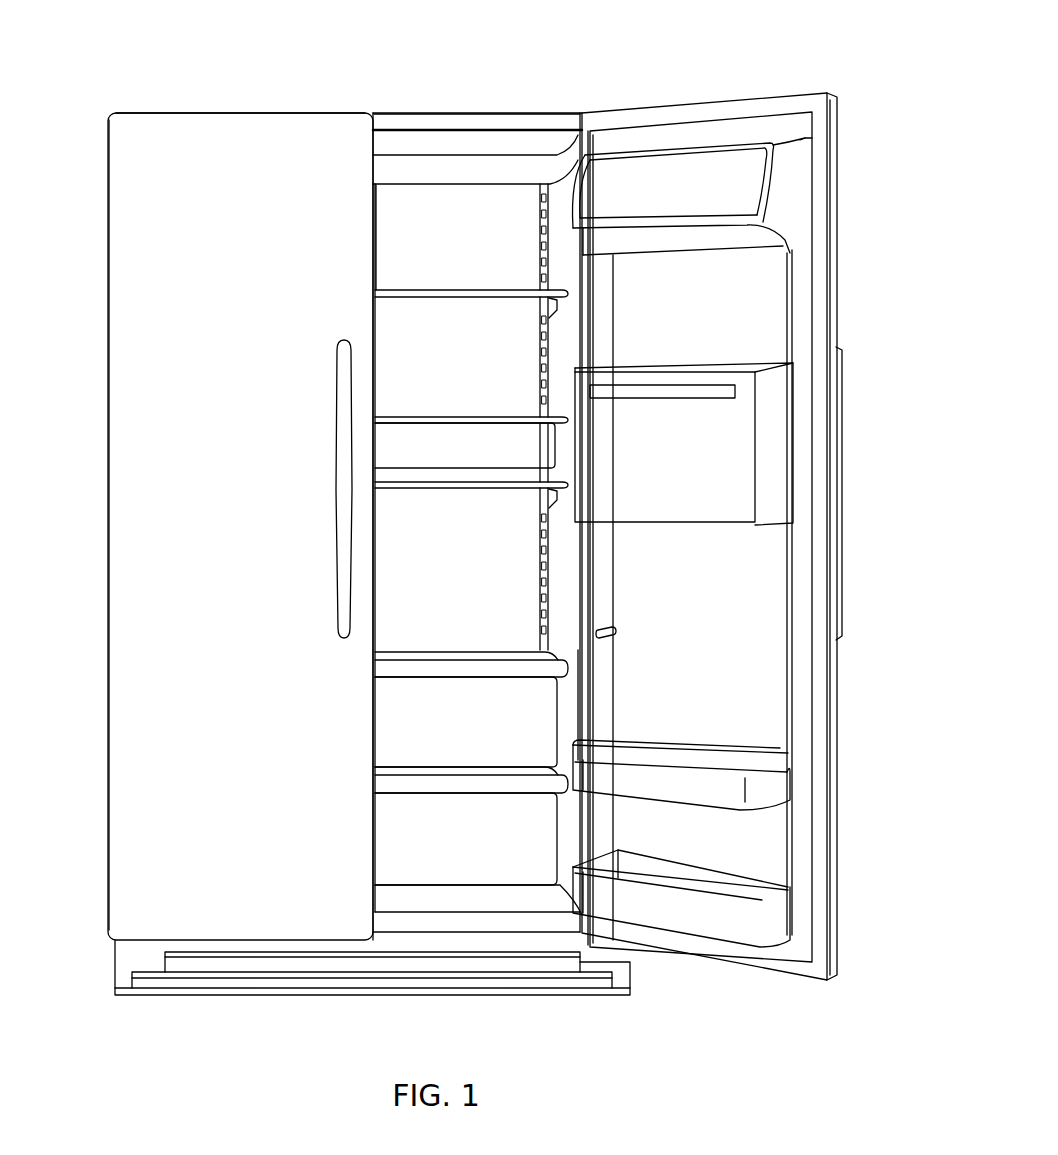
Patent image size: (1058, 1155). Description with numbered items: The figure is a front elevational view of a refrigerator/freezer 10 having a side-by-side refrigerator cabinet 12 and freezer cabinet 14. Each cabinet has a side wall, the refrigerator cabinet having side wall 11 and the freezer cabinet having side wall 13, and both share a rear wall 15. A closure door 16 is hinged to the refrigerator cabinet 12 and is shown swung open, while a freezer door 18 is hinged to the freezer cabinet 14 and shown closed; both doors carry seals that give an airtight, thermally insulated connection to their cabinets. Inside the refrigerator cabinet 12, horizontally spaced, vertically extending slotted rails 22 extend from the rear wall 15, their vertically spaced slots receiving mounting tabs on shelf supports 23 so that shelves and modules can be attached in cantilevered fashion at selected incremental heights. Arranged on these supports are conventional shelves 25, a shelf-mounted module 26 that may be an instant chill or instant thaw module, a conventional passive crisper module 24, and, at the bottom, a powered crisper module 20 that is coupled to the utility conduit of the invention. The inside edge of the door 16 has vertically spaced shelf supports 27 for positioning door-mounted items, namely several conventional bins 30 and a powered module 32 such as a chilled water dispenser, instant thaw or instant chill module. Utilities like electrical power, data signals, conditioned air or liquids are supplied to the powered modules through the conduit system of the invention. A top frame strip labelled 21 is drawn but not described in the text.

The refrigerator/freezer 10 is at (652, 62).
The side wall 11 is at (572, 580).
The refrigerator cabinet 12 is at (453, 198).
The side wall 13 is at (108, 588).
The freezer cabinet 14 is at (232, 198).
The rear wall 15 is at (479, 618).
The closure door 16 is at (838, 289).
The freezer door 18 is at (150, 332).
The powered crisper module 20 is at (470, 860).
The cabinet top frame 21 is at (397, 122).
The slotted rail 22 is at (533, 403).
The shelf support 23 is at (542, 306).
The passive crisper module 24 is at (432, 702).
The shelf 25 is at (440, 290).
The shelf-mounted module 26 is at (432, 440).
The shelf support 27 is at (600, 632).
The bin 30 is at (790, 203).
The powered module 32 is at (770, 462).